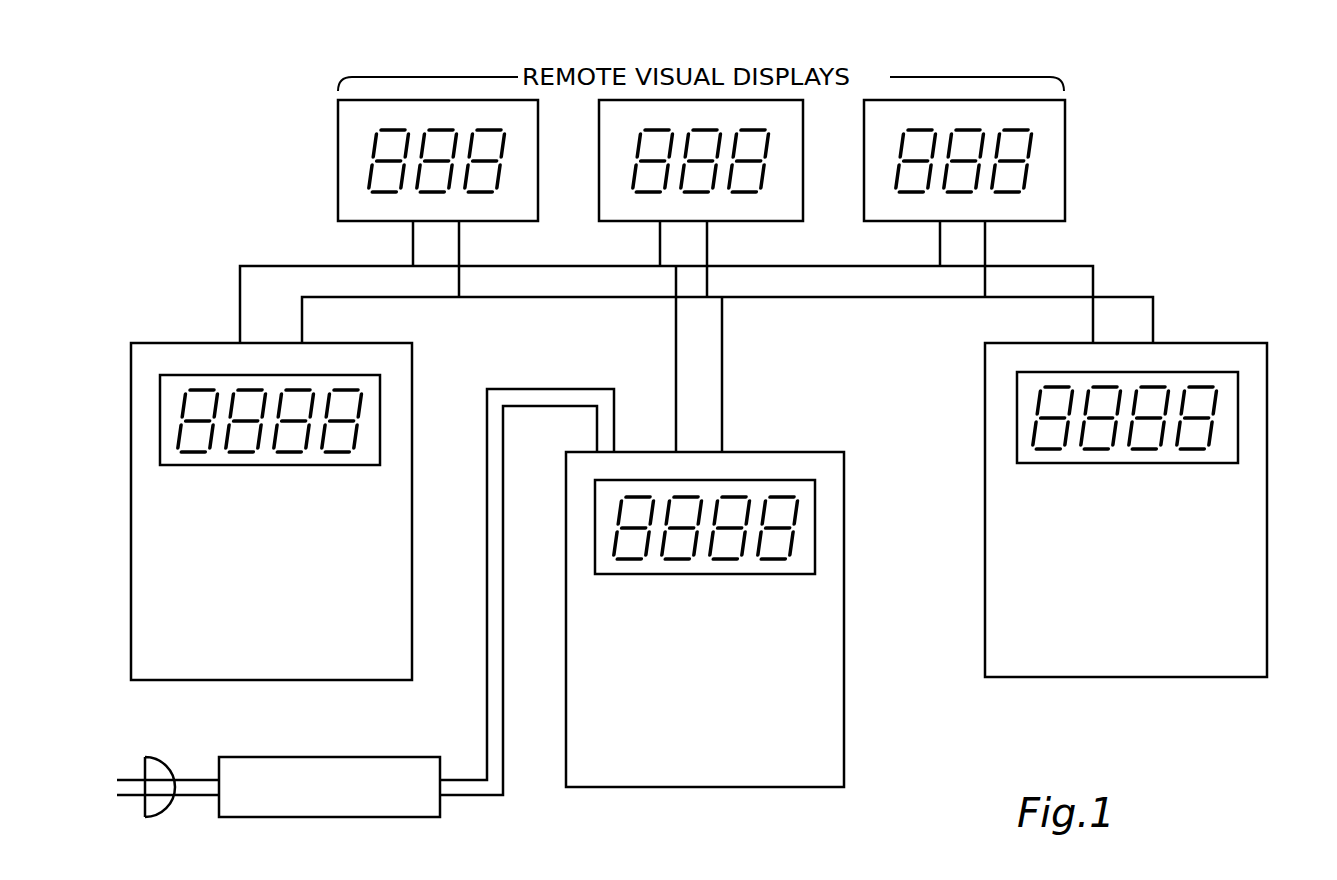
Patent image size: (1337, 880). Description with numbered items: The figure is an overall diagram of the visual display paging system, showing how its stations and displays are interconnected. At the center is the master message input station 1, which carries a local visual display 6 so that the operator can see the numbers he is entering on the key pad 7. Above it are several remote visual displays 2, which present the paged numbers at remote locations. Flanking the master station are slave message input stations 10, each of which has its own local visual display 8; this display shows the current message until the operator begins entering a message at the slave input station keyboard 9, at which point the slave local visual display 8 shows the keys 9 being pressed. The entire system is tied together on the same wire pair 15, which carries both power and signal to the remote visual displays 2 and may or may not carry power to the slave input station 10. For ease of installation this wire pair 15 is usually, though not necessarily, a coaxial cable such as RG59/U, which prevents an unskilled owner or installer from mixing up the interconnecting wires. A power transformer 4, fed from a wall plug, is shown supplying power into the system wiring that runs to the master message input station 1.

The master message input station 1 is at (844, 533).
The remote visual display 2 is at (338, 128).
The power transformer 4 is at (407, 817).
The local visual display 6 is at (780, 480).
The key pad 7 is at (797, 698).
The local visual display 8 is at (1222, 393).
The slave input station keyboard 9 is at (1200, 573).
The slave message input station 10 is at (412, 372).
The wire pair 15 is at (676, 318).